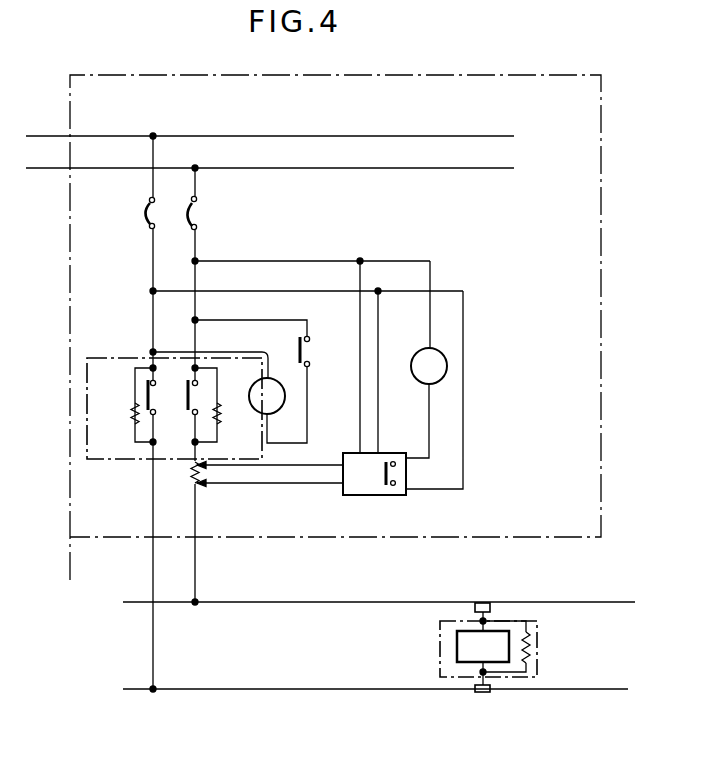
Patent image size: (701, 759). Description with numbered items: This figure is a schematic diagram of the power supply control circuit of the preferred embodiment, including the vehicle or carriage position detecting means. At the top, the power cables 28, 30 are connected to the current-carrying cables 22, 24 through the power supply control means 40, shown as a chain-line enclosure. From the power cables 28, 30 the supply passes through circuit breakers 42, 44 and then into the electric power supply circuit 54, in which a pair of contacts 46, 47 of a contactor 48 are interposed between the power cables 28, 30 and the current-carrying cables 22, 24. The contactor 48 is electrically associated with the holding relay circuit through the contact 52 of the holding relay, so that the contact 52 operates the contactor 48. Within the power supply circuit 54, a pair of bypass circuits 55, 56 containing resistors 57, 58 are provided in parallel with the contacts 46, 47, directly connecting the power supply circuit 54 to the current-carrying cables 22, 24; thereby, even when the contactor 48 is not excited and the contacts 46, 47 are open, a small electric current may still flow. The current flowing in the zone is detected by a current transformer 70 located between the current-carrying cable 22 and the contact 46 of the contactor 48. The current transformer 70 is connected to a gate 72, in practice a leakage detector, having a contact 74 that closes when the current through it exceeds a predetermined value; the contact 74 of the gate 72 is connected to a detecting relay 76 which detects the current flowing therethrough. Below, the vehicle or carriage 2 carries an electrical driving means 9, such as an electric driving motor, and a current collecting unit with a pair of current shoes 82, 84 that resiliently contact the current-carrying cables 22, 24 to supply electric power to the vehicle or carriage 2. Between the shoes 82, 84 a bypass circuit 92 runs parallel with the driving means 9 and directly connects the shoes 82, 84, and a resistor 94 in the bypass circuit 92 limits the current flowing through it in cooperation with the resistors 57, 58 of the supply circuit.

The power supply control means 40 is at (578, 60).
The power cable 30 is at (245, 136).
The power cable 28 is at (262, 170).
The circuit breaker 44 is at (147, 214).
The circuit breaker 42 is at (197, 212).
The electric power supply circuit 54 is at (174, 392).
The contact 47 is at (144, 393).
The contact 46 is at (190, 394).
The resistor 58 is at (131, 417).
The resistor 57 is at (221, 406).
The bypass circuit 56 is at (135, 440).
The bypass circuit 55 is at (218, 437).
The contact of the holding relay 52 is at (308, 351).
The contactor 48 is at (285, 396).
The detecting relay 76 is at (447, 366).
The gate 72 is at (352, 495).
The contact 74 is at (385, 486).
The current transformer 70 is at (190, 478).
The current-carrying cable 22 is at (343, 602).
The current-carrying cable 24 is at (348, 689).
The current shoe 82 is at (483, 603).
The current shoe 84 is at (483, 692).
The vehicle or carriage 2 is at (537, 640).
The electrical driving means 9 is at (457, 648).
The resistor 94 is at (530, 648).
The bypass circuit 92 is at (521, 672).